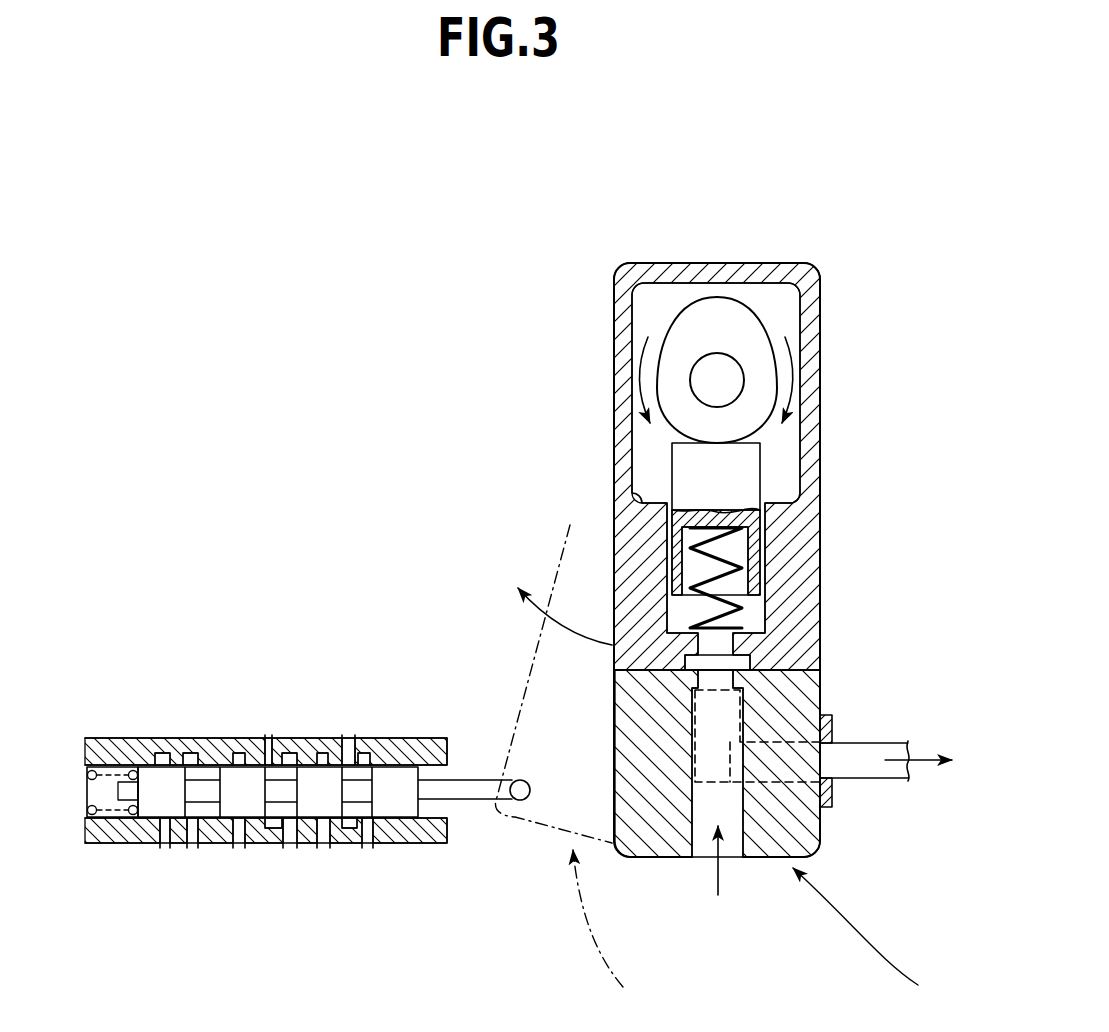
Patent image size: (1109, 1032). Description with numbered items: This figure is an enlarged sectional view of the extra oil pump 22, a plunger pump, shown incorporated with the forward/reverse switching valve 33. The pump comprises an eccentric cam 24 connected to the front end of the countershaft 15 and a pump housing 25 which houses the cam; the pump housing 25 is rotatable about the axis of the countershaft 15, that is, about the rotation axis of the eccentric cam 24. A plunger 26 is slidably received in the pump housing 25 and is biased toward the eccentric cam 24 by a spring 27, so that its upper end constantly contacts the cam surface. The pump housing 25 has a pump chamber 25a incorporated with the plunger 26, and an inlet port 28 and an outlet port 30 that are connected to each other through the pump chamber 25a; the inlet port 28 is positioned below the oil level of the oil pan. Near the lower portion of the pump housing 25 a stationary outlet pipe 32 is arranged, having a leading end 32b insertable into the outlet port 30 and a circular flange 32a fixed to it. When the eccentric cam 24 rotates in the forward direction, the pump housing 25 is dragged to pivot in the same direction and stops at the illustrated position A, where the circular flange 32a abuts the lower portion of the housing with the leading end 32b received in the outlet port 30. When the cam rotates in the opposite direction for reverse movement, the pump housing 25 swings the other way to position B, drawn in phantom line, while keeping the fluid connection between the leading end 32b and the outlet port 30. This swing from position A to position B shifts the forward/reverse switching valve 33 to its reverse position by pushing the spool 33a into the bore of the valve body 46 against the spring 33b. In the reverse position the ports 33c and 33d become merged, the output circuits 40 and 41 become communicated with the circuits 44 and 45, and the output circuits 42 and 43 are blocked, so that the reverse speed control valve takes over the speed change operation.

The countershaft 15 is at (717, 368).
The extra oil pump 22 is at (593, 268).
The eccentric cam 24 is at (665, 325).
The pump housing 25 is at (809, 268).
The pump chamber 25a is at (757, 608).
The plunger 26 is at (762, 480).
The spring 27 is at (742, 578).
The inlet port 28 is at (735, 825).
The outlet port 30 is at (773, 768).
The outlet pipe 32 is at (882, 743).
The circular flange 32a is at (832, 715).
The leading end 32b is at (825, 812).
The forward/reverse switching valve 33 is at (390, 722).
The spool 33a is at (148, 783).
The spring 33b is at (133, 773).
The port 33c is at (160, 850).
The port 33d is at (193, 850).
The output circuit 40 is at (290, 850).
The output circuit 41 is at (365, 850).
The output circuit 42 is at (270, 738).
The output circuit 43 is at (347, 738).
The circuit 44 is at (240, 850).
The circuit 45 is at (323, 850).
The body 46 is at (447, 830).
The position A is at (864, 938).
The position B is at (562, 773).